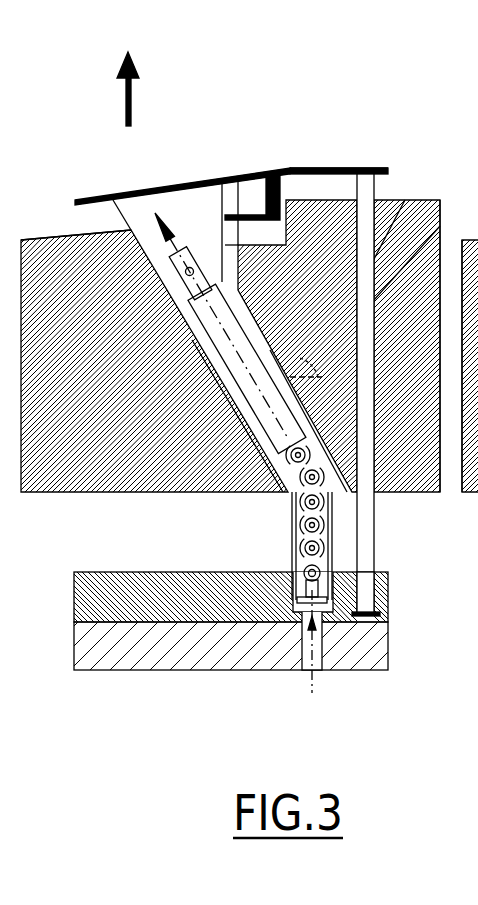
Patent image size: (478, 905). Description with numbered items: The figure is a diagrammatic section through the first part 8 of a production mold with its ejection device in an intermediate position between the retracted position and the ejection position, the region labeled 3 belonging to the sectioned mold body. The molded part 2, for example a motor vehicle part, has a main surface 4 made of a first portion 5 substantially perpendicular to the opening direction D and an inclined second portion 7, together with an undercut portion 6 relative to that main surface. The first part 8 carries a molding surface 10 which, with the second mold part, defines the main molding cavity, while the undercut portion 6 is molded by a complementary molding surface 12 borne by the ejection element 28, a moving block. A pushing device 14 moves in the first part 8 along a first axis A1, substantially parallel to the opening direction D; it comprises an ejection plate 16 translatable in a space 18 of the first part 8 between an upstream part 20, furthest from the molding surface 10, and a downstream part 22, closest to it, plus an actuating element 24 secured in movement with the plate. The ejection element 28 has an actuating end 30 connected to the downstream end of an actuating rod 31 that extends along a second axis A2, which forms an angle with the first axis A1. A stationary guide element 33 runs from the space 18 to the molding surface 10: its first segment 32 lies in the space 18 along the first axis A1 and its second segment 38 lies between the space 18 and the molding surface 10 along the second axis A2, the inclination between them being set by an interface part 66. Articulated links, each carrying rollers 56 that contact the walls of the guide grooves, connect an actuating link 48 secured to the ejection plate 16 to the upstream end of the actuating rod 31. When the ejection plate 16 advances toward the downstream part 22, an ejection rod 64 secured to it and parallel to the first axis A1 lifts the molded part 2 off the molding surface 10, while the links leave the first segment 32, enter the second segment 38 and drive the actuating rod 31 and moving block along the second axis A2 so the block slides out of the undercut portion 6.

The molded part 2 is at (163, 188).
The housing body 3 is at (472, 512).
The main surface 4 is at (263, 172).
The first portion 5 is at (320, 168).
The undercut portion 6 is at (293, 190).
The second portion 7 is at (147, 190).
The first part 8 is at (45, 645).
The molding surface 10 is at (72, 238).
The complementary molding surface 12 is at (265, 196).
The pushing device 14 is at (208, 545).
The ejection plate 16 is at (185, 660).
The space 18 is at (113, 556).
The upstream part 20 is at (0, 717).
The downstream part 22 is at (0, 545).
The actuating element 24 is at (300, 597).
The ejection element 28 is at (155, 252).
The actuating end 30 is at (222, 262).
The actuating rod 31 is at (220, 398).
The first segment 32 is at (336, 540).
The guide element 33 is at (12, 516).
The second segment 38 is at (405, 203).
The actuating link 48 is at (327, 592).
The roller 56 is at (333, 507).
The ejection rod 64 is at (445, 245).
The interface part 66 is at (348, 465).
The first axis A1 is at (314, 655).
The second axis A2 is at (313, 285).
The opening direction D is at (117, 89).